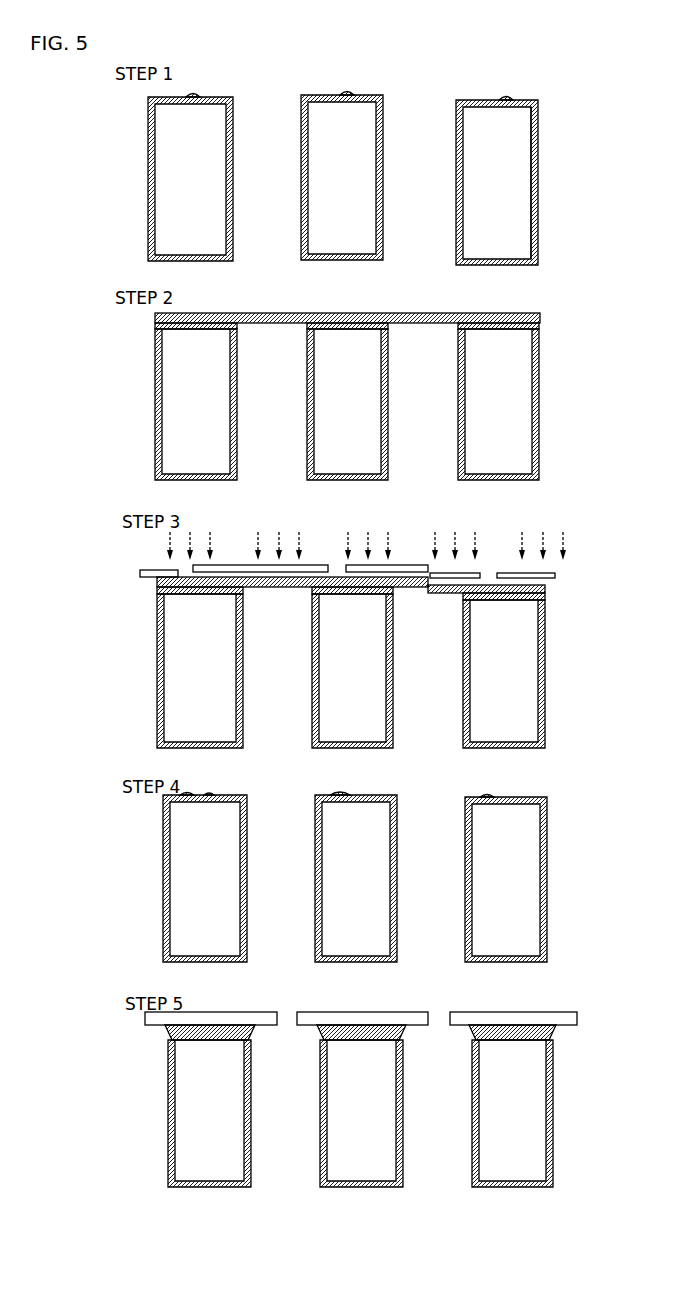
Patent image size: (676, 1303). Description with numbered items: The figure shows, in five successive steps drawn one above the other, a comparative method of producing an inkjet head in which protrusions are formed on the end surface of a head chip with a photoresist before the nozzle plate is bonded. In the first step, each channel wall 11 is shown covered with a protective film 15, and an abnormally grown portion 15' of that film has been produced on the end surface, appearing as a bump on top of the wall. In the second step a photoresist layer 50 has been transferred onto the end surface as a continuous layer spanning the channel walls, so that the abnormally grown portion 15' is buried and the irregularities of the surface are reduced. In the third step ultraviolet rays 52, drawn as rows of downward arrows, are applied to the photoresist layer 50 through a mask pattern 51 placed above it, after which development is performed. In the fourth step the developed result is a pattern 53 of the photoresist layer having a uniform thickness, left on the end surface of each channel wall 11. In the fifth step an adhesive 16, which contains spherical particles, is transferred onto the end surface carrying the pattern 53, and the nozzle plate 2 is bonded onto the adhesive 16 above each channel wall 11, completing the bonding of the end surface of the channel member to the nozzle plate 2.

The channel wall 11 is at (520, 162).
The protective film 15 is at (553, 183).
The abnormally grown portion 15' is at (528, 83).
The photoresist layer 50 is at (525, 313).
The mask pattern 51 is at (555, 575).
The ultraviolet rays 52 is at (545, 545).
The pattern of the photoresist layer 53 is at (490, 793).
The nozzle plate 2 is at (550, 1020).
The adhesive 16 is at (540, 1036).